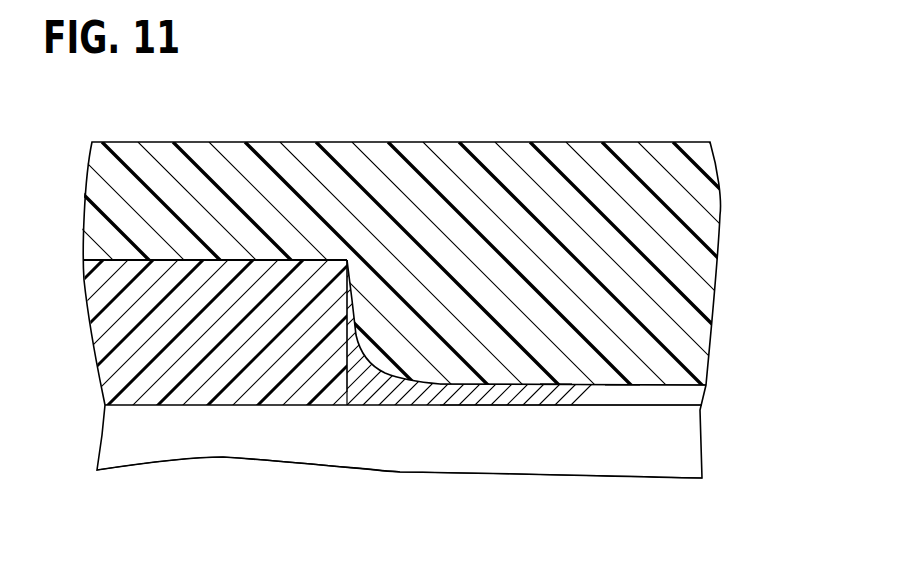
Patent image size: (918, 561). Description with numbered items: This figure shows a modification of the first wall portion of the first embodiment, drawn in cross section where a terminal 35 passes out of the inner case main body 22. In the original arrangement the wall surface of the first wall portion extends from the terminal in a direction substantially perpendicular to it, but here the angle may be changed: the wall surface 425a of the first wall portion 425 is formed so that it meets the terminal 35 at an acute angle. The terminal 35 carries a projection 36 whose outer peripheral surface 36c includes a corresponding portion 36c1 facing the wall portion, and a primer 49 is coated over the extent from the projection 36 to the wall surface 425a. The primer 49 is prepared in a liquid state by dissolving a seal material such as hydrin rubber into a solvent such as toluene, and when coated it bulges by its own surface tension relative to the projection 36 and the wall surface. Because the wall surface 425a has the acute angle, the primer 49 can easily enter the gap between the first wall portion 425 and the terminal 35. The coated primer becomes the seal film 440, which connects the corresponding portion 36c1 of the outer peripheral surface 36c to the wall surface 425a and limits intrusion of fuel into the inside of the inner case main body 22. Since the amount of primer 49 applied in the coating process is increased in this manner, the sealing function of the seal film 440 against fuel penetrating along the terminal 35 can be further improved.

The inner case main body 22 is at (263, 258).
The first wall portion 425 is at (325, 310).
The wall surface 425a is at (325, 392).
The projection 36 is at (686, 370).
The outer peripheral surface 36c is at (622, 385).
The corresponding portion of the outer peripheral surface 36c1 is at (556, 384).
The seal film 440 is at (692, 398).
The primer 49 is at (627, 388).
The terminal 35 is at (660, 440).